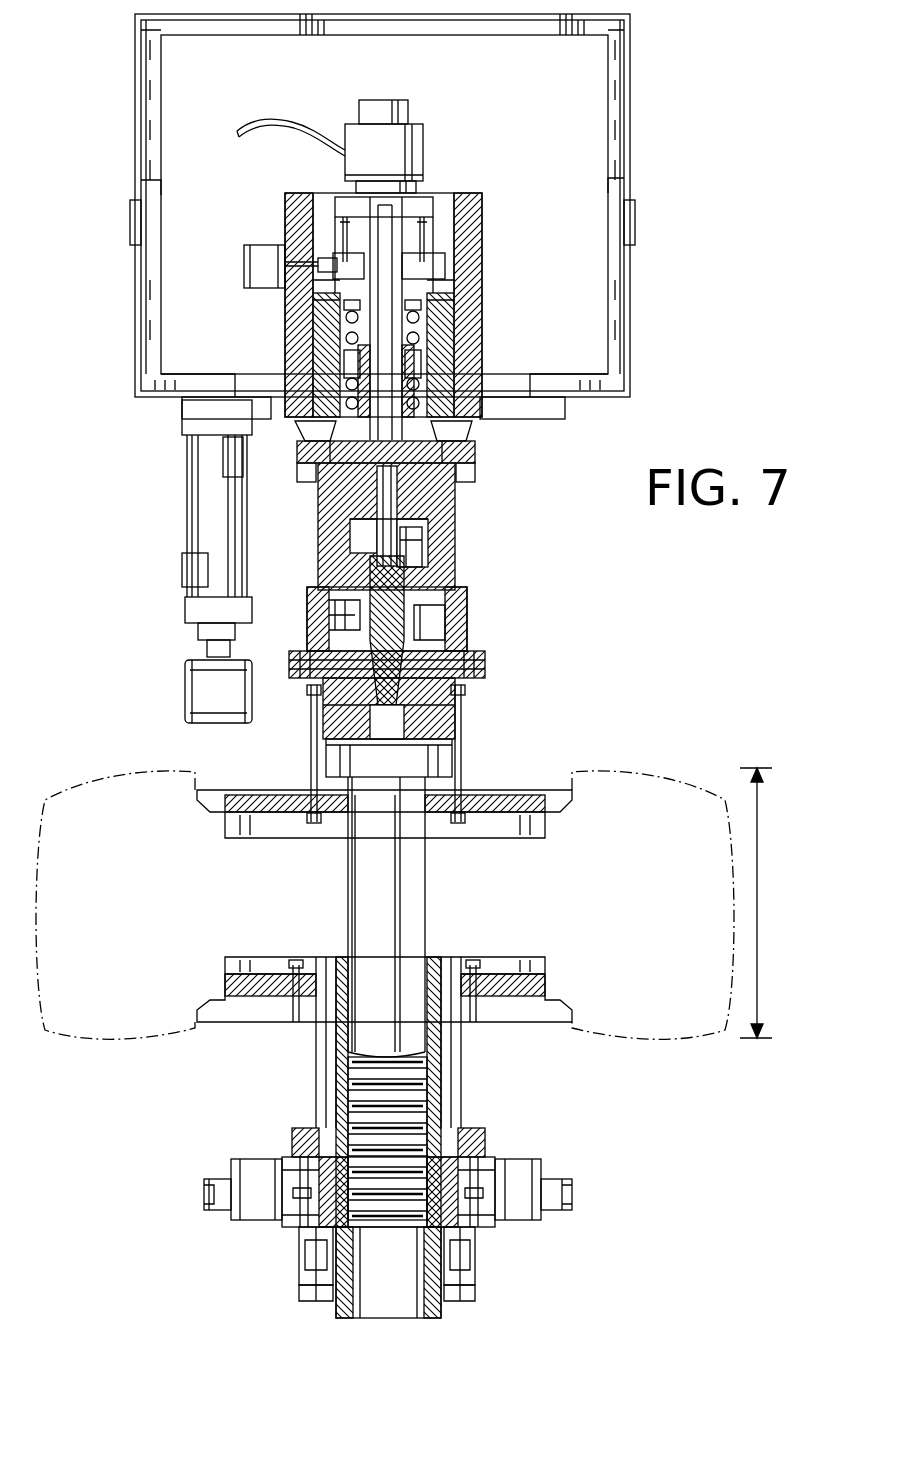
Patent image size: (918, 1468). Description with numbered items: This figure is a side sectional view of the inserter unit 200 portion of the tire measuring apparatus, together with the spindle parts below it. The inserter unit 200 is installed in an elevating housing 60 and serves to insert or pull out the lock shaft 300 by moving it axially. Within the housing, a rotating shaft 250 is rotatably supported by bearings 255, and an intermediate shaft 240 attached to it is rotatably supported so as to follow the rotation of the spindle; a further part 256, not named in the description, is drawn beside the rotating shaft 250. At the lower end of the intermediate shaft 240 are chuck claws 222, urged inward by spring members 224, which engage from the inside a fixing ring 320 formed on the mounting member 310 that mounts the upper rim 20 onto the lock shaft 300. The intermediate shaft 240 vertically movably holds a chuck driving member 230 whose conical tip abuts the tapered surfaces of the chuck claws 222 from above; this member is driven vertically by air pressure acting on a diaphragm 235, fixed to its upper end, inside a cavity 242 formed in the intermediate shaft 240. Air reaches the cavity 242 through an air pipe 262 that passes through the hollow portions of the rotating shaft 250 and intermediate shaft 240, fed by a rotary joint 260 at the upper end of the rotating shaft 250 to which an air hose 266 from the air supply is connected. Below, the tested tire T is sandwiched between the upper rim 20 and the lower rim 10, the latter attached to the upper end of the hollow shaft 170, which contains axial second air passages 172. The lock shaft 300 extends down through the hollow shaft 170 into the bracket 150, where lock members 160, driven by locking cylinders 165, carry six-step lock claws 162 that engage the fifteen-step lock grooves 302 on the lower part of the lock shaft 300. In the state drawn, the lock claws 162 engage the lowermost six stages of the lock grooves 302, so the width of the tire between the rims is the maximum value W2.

The elevating housing 60 is at (188, 290).
The air hose 266 is at (280, 118).
The rotary joint 260 is at (420, 138).
The sensor connector 256 is at (447, 257).
The bearings 255 is at (420, 338).
The rotating shaft 250 is at (399, 366).
The air pipe 262 is at (470, 444).
The intermediate shaft 240 is at (455, 518).
The cavity 242 is at (430, 535).
The diaphragm 235 is at (372, 572).
The chuck driving member 230 is at (462, 650).
The spring members 224 is at (485, 661).
The chuck claws 222 is at (458, 697).
The fixing ring 320 is at (462, 733).
The mounting member 310 is at (462, 766).
The inserter unit 200 is at (494, 590).
The tested tire T is at (690, 772).
The maximum tire width W2 is at (770, 903).
The upper rim 20 is at (496, 815).
The lock shaft 300 is at (394, 1027).
The lower rim 10 is at (512, 982).
The hollow shaft 170 is at (306, 1094).
The second air passages 172 is at (318, 1052).
The lock grooves 302 is at (421, 1222).
The lock claws 162 is at (461, 1142).
The lock member 160 is at (294, 1147).
The locking cylinder 165 is at (522, 1176).
The bracket 150 is at (307, 1279).